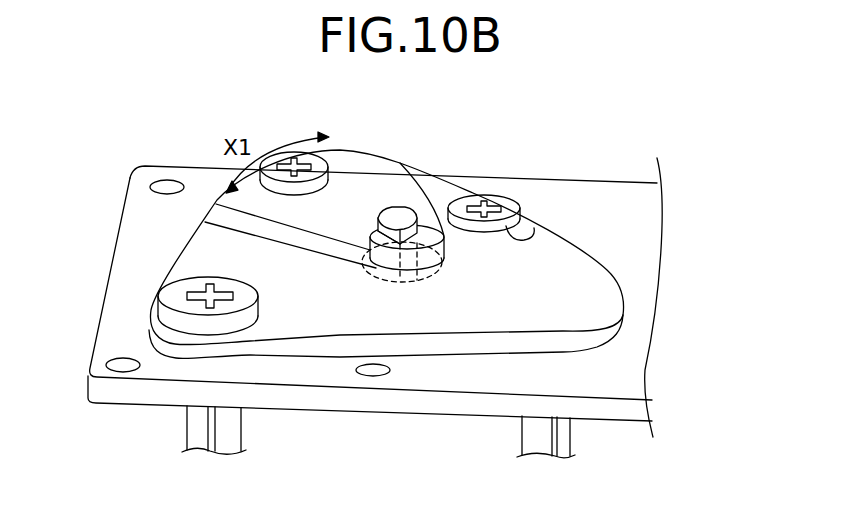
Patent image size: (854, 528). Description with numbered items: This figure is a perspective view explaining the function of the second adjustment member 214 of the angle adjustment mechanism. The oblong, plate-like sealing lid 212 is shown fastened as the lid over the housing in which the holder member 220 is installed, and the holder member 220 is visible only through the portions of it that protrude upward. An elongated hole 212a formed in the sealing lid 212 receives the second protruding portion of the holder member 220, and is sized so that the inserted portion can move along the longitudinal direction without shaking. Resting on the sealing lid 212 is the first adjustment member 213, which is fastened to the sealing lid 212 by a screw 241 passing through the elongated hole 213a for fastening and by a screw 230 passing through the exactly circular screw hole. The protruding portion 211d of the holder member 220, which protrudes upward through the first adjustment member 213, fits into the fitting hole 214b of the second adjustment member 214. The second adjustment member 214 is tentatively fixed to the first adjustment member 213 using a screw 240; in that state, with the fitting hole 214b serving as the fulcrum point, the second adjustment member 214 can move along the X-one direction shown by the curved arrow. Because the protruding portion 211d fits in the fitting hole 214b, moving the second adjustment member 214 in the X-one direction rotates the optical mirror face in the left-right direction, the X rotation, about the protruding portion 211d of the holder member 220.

The sealing lid 212 is at (338, 377).
The elongated hole 212a is at (425, 285).
The first adjustment member 213 is at (594, 290).
The hole for fastening 213a is at (517, 239).
The second adjustment member 214 is at (395, 183).
The fitting hole 214b is at (425, 232).
The protruding portion 211d is at (397, 217).
The holder member 220 is at (198, 428).
The screw 230 is at (175, 293).
The screw 240 is at (327, 152).
The screw 241 is at (513, 200).